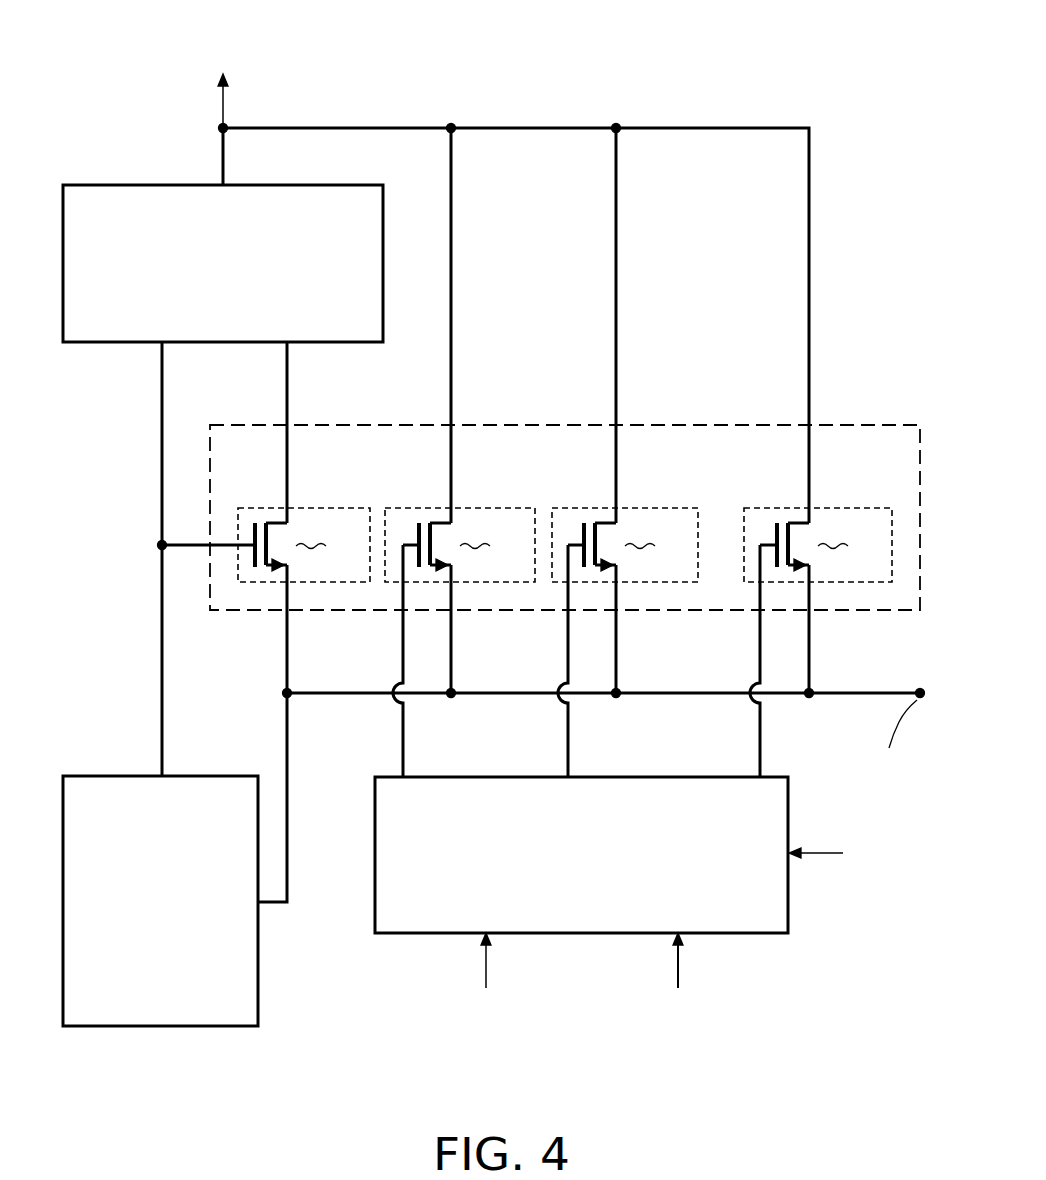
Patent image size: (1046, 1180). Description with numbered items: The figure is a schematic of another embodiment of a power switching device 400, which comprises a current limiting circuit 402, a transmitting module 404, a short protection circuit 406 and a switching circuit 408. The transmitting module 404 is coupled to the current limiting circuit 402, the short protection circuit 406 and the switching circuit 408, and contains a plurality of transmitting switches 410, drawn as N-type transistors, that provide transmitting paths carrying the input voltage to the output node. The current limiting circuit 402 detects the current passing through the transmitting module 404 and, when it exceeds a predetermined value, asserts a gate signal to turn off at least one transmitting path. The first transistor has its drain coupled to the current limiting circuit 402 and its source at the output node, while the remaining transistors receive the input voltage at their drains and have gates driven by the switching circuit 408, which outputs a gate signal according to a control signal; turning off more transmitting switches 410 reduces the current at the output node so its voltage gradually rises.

The power switching device 400 is at (893, 45).
The current limiting circuit 402 is at (250, 280).
The transmitting module 404 is at (866, 420).
The short protection circuit 406 is at (134, 1000).
The switching circuit 408 is at (556, 889).
The transmitting switches 410 is at (343, 505).